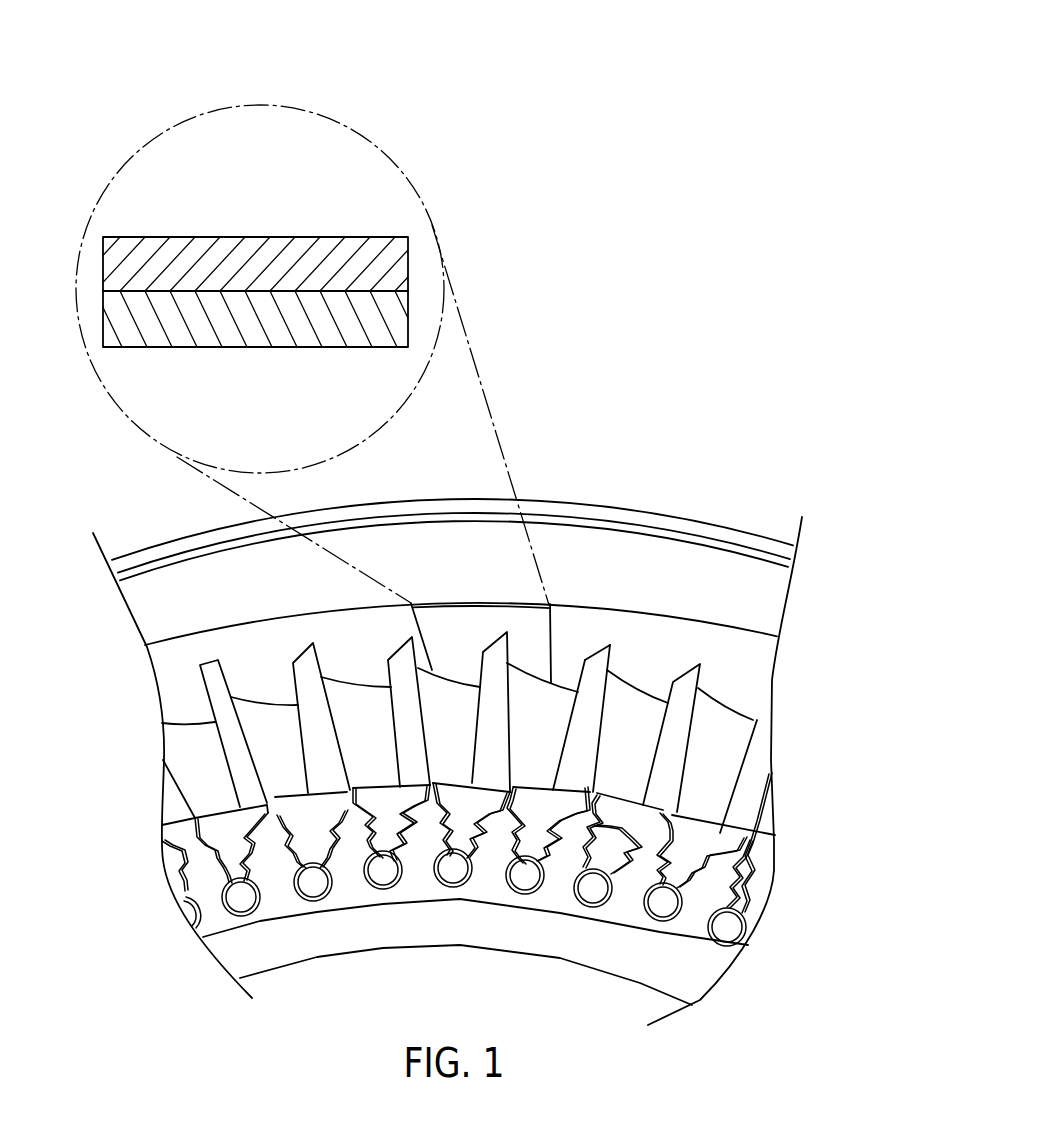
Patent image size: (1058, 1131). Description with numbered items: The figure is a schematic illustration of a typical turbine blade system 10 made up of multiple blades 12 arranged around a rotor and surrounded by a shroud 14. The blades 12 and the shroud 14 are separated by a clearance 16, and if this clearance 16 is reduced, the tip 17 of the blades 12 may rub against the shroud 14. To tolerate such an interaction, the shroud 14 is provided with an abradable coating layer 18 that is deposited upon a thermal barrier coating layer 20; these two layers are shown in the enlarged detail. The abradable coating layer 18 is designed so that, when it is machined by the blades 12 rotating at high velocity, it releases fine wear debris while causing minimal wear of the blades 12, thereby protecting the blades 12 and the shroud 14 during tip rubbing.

The turbine blade system 10 is at (748, 59).
The blades 12 is at (640, 713).
The shroud 14 is at (533, 625).
The clearance 16 is at (368, 621).
The tip 17 is at (608, 648).
The abradable coating layer 18 is at (256, 243).
The thermal barrier coating layer 20 is at (262, 340).